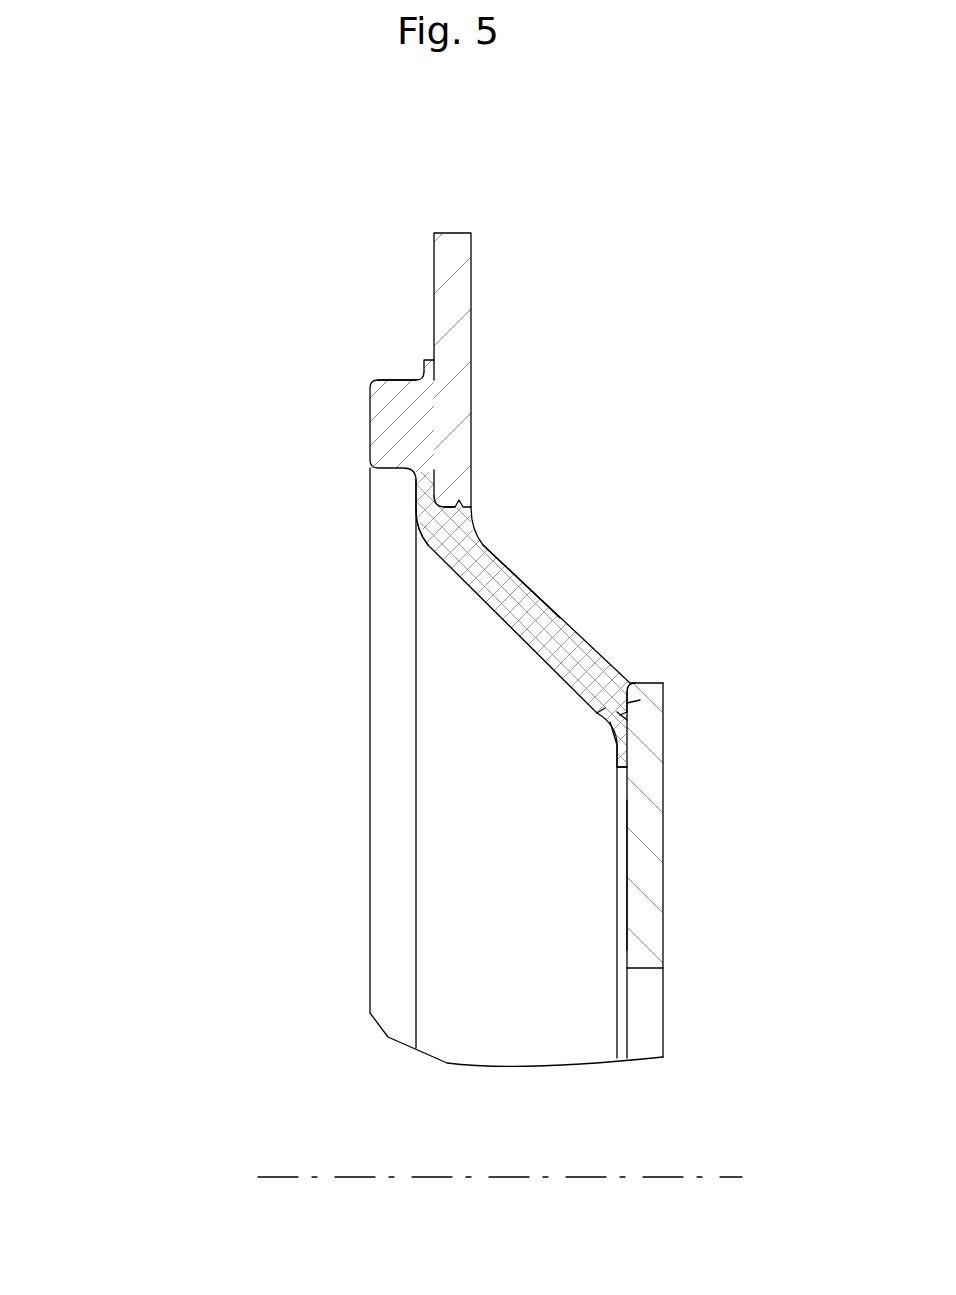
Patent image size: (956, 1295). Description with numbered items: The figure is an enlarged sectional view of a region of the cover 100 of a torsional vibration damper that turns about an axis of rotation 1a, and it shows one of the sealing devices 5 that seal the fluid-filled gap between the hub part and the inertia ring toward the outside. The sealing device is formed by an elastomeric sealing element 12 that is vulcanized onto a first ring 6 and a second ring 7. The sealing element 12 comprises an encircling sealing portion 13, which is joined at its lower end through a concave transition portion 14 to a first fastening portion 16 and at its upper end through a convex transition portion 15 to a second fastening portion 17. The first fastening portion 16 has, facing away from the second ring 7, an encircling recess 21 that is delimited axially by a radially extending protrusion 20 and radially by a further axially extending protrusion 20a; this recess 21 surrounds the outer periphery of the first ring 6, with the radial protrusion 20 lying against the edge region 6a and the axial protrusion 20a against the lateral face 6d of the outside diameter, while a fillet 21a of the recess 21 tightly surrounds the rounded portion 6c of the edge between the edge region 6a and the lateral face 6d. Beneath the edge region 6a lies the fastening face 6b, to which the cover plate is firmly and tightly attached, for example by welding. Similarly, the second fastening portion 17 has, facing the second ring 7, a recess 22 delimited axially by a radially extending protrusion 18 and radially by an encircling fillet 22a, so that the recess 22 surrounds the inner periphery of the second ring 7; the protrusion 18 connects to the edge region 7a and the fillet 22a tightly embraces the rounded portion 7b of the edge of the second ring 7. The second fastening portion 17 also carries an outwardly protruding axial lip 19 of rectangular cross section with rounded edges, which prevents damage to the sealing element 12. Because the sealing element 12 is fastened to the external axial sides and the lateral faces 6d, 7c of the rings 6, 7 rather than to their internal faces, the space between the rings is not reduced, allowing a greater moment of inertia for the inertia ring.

The cover 100 is at (487, 206).
The sealing device 5 is at (196, 668).
The axis of rotation 1a is at (727, 1177).
The first ring 6 is at (645, 920).
The edge region 6a is at (608, 712).
The fastening face 6b is at (626, 873).
The rounded portion 6c is at (638, 700).
The lateral face 6d is at (633, 686).
The second ring 7 is at (456, 293).
The edge region 7a is at (425, 384).
The rounded portion 7b is at (443, 497).
The lateral face 7c is at (455, 513).
The sealing element 12 is at (510, 565).
The sealing portion 13 is at (515, 607).
The transition portion 14 is at (612, 703).
The transition portion 15 is at (443, 545).
The first fastening portion 16 is at (612, 745).
The second fastening portion 17 is at (423, 417).
The protrusion 18 is at (424, 362).
The lip 19 is at (380, 428).
The protrusion 20 is at (620, 758).
The protrusion 20a is at (645, 682).
The recess 21 is at (625, 717).
The fillet 21a is at (652, 717).
The recess 22 is at (437, 466).
The fillet 22a is at (466, 500).